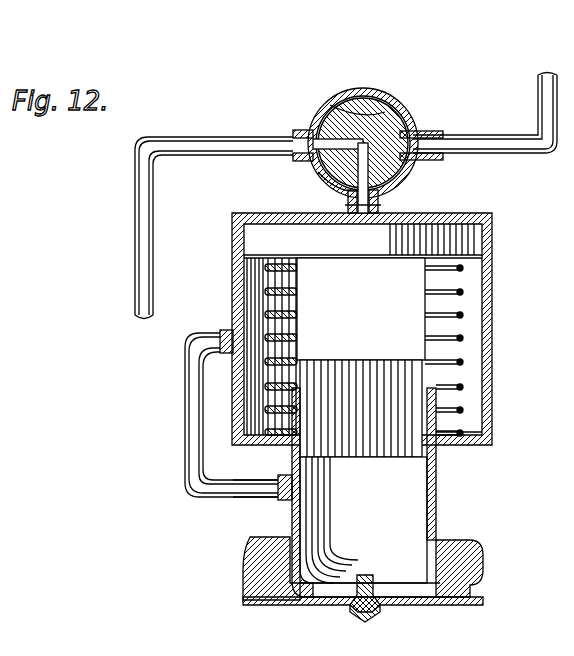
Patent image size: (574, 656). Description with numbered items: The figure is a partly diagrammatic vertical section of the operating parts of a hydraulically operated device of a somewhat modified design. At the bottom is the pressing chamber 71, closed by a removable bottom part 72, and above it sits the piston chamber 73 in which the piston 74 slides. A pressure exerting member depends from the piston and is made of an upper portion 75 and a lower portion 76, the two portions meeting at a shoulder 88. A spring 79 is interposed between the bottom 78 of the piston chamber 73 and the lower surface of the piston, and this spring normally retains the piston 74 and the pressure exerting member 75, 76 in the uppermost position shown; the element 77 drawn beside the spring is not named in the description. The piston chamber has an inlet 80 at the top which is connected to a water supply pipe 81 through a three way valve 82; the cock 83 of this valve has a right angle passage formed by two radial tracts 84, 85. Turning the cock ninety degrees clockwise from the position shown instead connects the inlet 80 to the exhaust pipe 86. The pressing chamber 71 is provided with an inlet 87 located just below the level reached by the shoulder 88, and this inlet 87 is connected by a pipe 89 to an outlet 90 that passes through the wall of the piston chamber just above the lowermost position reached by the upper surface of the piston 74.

The pressing chamber 71 is at (430, 495).
The removable bottom part 72 is at (466, 597).
The piston chamber 73 is at (470, 288).
The piston 74 is at (462, 237).
The upper portion of pressure exerting member 75 is at (330, 299).
The lower portion of pressure exerting member 76 is at (295, 447).
The spring 77 is at (468, 347).
The bottom of piston chamber 78 is at (462, 442).
The spring 79 is at (465, 258).
The inlet of piston chamber 80 is at (380, 210).
The water supply pipe 81 is at (522, 150).
The three way valve 82 is at (385, 102).
The cock 83 is at (330, 104).
The radial tract 84 is at (405, 124).
The radial tract 85 is at (330, 185).
The exhaust pipe 86 is at (137, 234).
The inlet of pressing chamber 87 is at (265, 487).
The shoulder 88 is at (466, 371).
The pipe 89 is at (186, 425).
The outlet of piston chamber 90 is at (220, 338).